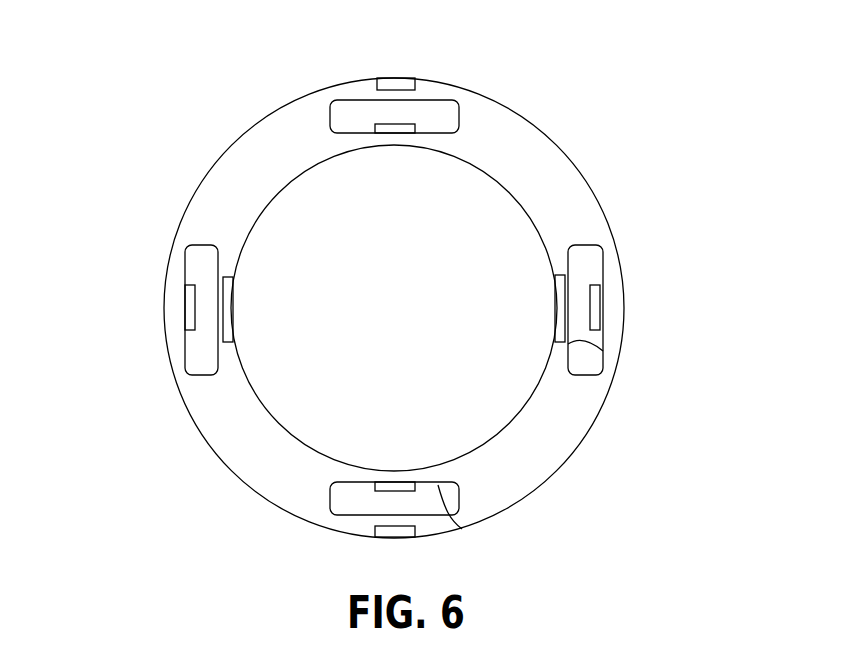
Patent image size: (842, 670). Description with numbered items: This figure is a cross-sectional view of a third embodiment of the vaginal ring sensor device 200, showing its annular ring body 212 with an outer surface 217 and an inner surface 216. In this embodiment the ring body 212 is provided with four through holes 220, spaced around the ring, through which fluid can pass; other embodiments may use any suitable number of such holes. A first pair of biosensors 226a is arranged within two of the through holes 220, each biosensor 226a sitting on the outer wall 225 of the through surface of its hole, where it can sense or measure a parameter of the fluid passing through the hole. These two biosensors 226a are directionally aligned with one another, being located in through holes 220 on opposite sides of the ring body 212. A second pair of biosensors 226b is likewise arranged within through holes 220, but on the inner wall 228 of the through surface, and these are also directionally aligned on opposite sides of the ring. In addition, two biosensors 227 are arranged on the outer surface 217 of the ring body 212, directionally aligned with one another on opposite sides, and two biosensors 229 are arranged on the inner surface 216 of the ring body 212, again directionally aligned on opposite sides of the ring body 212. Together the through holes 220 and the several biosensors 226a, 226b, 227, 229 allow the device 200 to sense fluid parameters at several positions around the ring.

The vaginal ring sensor device 200 is at (246, 100).
The ring body 212 is at (511, 143).
The inner surface 216 is at (474, 450).
The outer surface 217 is at (589, 432).
The through hole 220 is at (200, 270).
The outer wall 225 is at (568, 344).
The biosensor 226a is at (598, 317).
The biosensor 226b is at (402, 127).
The biosensor 227 is at (393, 79).
The inner wall 228 is at (460, 529).
The biosensor 229 is at (560, 305).